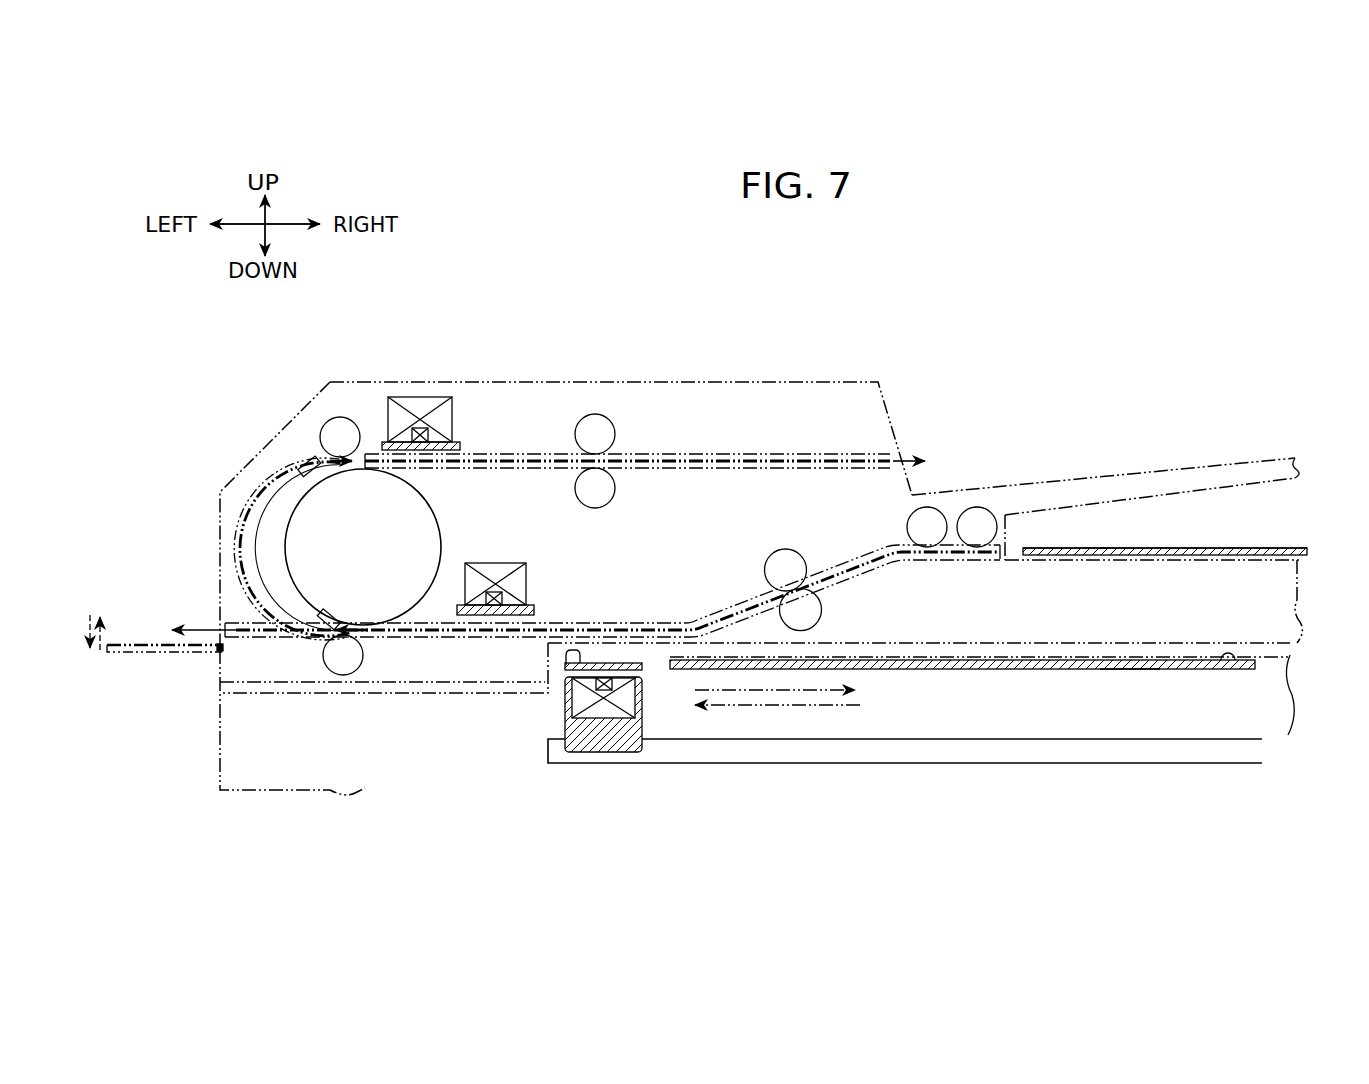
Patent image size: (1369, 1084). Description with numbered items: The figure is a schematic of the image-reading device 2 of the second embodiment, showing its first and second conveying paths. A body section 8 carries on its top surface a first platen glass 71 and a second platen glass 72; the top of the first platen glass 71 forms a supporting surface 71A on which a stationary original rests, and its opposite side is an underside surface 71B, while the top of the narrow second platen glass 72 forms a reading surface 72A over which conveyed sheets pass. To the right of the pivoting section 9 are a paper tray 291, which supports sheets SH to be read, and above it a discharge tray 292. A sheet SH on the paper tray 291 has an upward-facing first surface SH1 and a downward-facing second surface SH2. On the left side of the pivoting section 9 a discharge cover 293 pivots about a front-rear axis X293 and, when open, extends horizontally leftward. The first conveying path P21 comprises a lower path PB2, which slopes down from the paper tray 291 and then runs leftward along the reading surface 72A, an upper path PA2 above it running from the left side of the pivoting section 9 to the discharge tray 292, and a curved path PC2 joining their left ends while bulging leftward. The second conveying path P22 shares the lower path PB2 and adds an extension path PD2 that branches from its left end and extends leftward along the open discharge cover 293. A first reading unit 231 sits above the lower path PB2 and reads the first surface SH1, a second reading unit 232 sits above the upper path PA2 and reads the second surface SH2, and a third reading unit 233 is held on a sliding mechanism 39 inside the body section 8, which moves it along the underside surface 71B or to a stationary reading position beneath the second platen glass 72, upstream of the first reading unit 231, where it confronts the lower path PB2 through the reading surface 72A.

The image-reading device 2 is at (872, 338).
The body section 8 is at (216, 777).
The pivoting section 9 is at (216, 490).
The sliding mechanism 39 is at (919, 767).
The first platen glass 71 is at (972, 692).
The supporting surface 71A is at (1236, 661).
The underside surface 71B is at (1131, 669).
The second platen glass 72 is at (604, 731).
The reading surface 72A is at (565, 662).
The first reading unit 231 is at (514, 584).
The second reading unit 232 is at (438, 418).
The third reading unit 233 is at (606, 716).
The paper tray 291 is at (1105, 547).
The discharge tray 292 is at (1194, 462).
The discharge cover 293 is at (141, 656).
The axis X293 is at (216, 656).
The upper path PA2 is at (652, 458).
The lower path PB2 is at (822, 570).
The curved path PC2 is at (300, 476).
The extension path PD2 is at (233, 625).
The first conveying path P21 is at (934, 460).
The second conveying path P22 is at (179, 630).
The sheet SH is at (1193, 543).
The first surface SH1 is at (1265, 549).
The second surface SH2 is at (1258, 559).